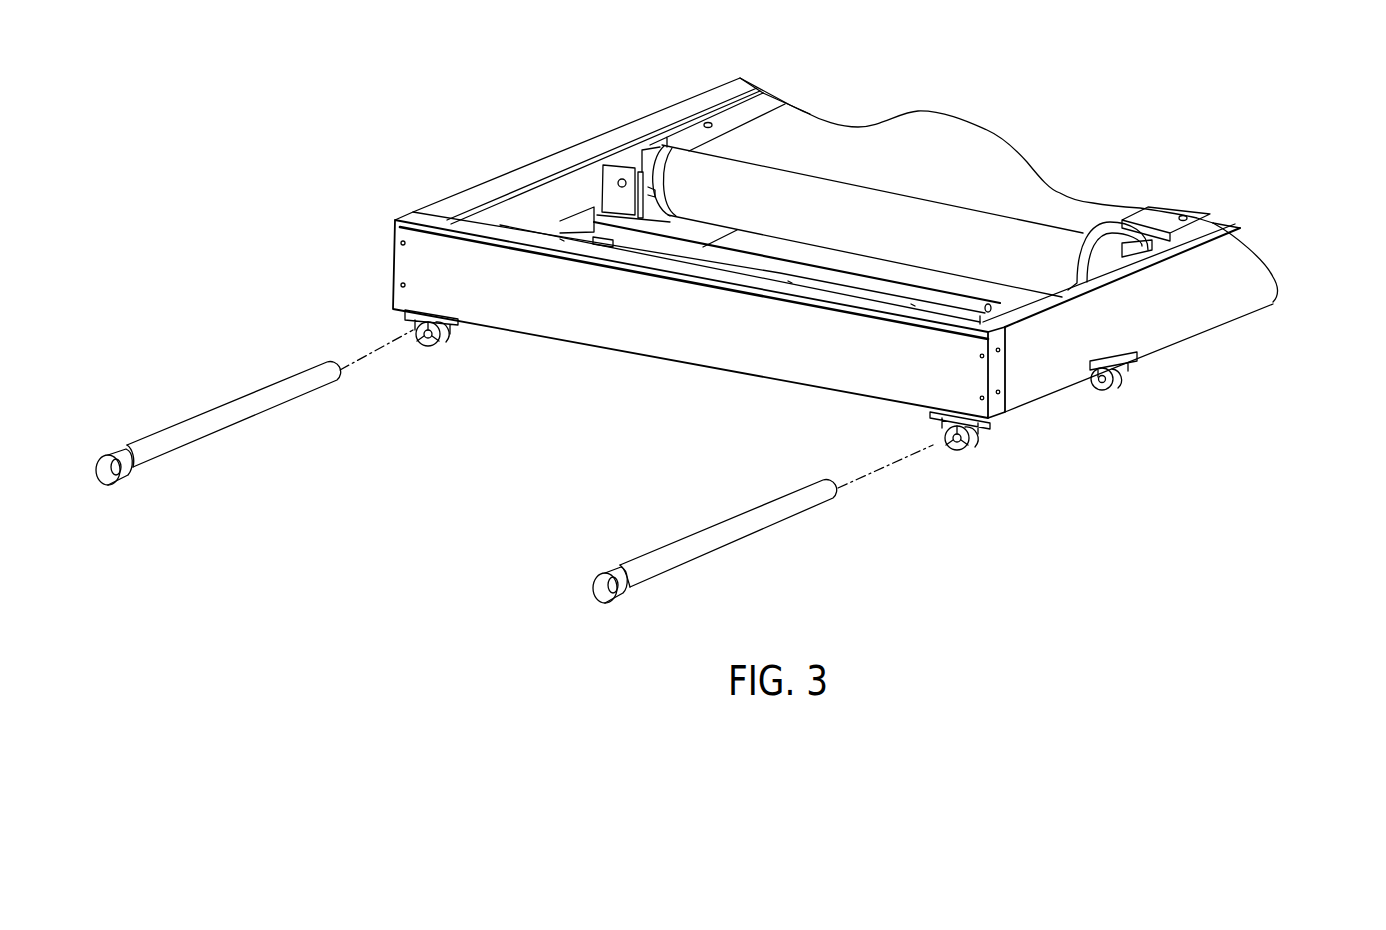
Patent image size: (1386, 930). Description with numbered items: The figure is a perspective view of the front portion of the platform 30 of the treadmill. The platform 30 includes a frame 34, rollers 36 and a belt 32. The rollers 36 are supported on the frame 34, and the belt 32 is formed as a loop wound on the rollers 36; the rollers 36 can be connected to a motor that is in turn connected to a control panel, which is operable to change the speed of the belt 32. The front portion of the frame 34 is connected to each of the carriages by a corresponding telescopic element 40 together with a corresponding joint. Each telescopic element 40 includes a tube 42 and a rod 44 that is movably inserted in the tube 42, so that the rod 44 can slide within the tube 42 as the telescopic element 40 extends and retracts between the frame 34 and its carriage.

The platform 30 is at (1188, 355).
The belt 32 is at (1012, 177).
The frame 34 is at (1240, 278).
The rollers 36 is at (662, 152).
The telescopic element 40 is at (239, 378).
The tube 42 is at (215, 418).
The rod 44 is at (111, 410).